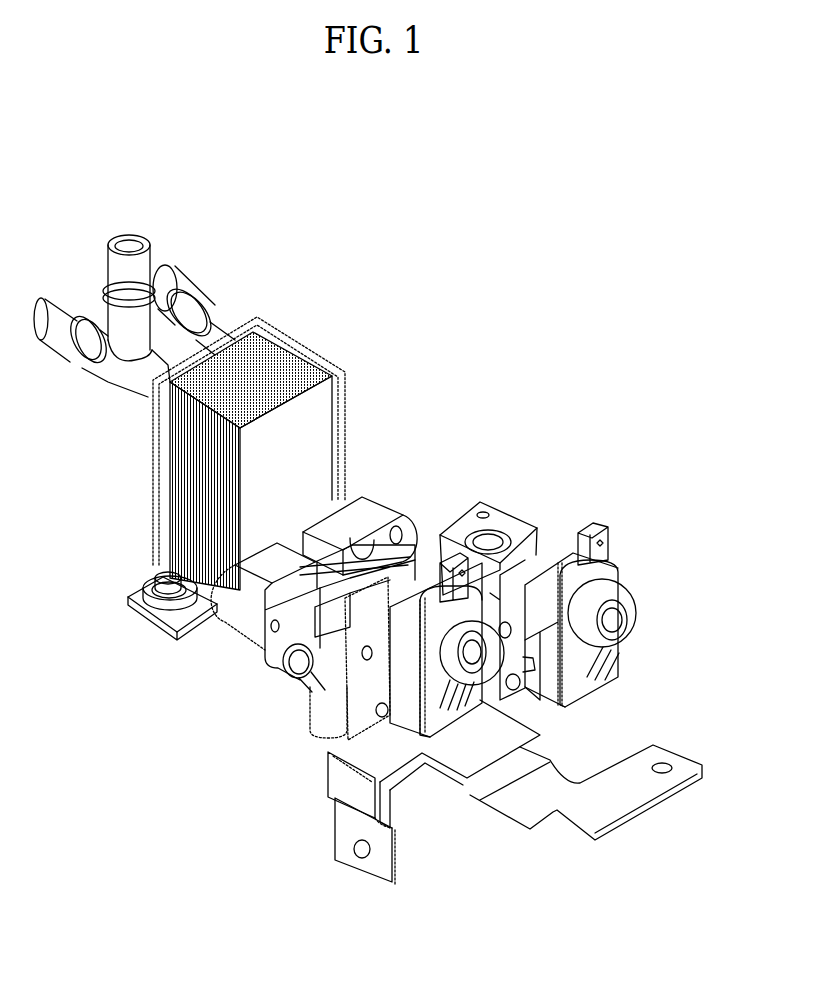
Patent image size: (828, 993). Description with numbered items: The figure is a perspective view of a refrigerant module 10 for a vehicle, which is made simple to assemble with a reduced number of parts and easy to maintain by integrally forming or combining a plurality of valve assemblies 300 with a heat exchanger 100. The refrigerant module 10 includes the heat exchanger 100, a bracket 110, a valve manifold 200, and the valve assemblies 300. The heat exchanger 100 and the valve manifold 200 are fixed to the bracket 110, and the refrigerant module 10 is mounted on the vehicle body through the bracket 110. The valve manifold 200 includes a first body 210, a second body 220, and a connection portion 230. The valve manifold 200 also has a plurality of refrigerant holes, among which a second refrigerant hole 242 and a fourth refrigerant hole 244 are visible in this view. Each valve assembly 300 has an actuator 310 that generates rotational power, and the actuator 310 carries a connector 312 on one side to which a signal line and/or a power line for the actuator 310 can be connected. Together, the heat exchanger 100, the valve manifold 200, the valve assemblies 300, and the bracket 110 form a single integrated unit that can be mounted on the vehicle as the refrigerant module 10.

The refrigerant module 10 is at (497, 251).
The heat exchanger 100 is at (312, 354).
The bracket 110 is at (332, 772).
The valve manifold 200 is at (360, 596).
The first body 210 is at (317, 586).
The second body 220 is at (519, 547).
The connection portion 230 is at (420, 537).
The second refrigerant hole 242 is at (296, 680).
The fourth refrigerant hole 244 is at (497, 538).
The valve assembly 300 is at (549, 689).
The actuator 310 is at (562, 690).
The connector 312 is at (606, 553).